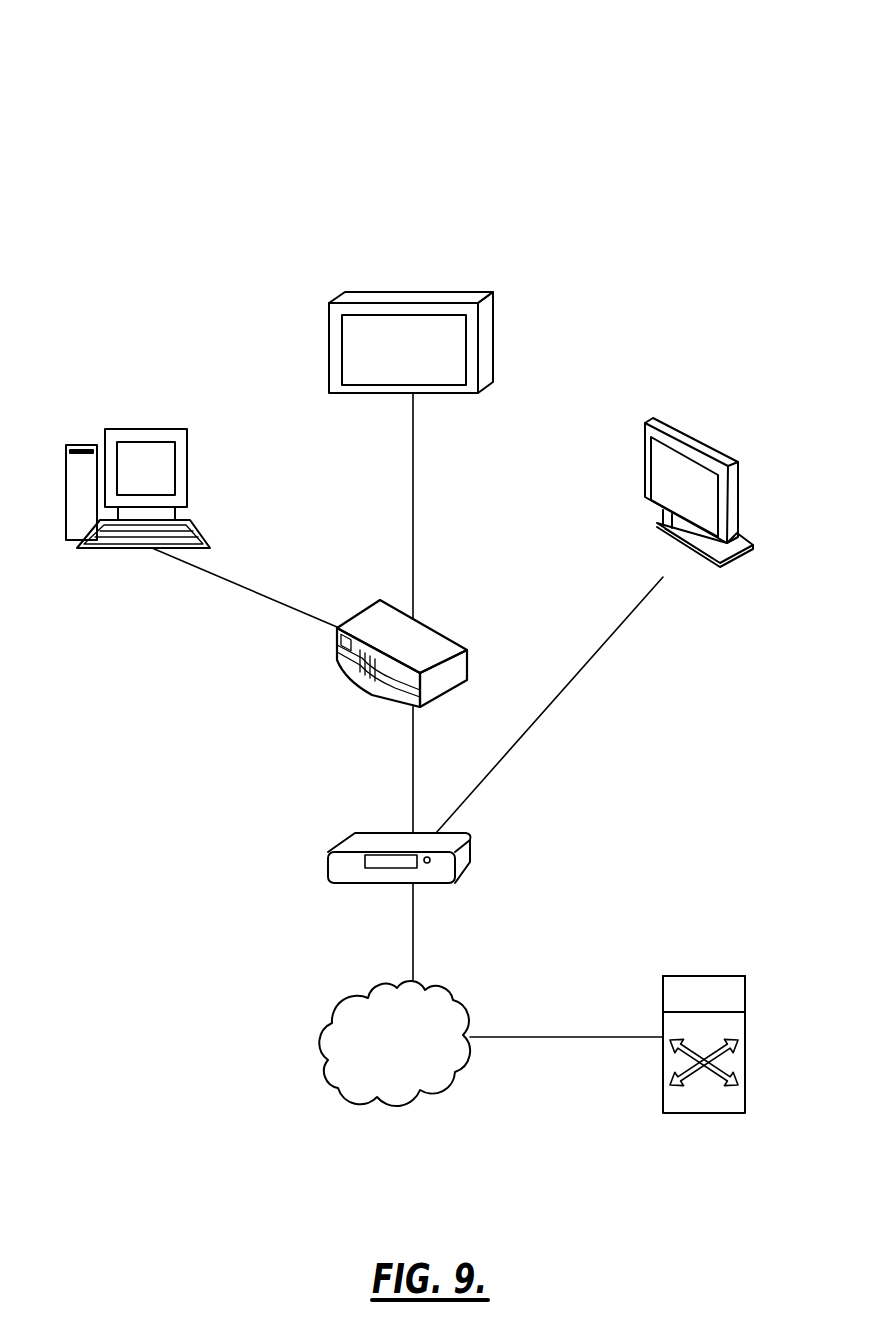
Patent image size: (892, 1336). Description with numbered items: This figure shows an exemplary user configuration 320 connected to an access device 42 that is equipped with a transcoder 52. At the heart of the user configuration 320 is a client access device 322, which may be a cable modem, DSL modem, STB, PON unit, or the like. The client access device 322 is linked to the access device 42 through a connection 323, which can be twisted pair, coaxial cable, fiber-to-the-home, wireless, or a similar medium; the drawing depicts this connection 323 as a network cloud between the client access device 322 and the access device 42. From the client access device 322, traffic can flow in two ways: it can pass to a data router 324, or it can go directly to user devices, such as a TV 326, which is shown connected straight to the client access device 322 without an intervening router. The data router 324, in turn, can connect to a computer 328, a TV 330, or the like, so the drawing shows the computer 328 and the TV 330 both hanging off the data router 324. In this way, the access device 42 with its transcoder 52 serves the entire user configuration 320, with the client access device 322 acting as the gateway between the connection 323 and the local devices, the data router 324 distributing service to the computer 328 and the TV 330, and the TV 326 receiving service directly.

The user configuration 320 is at (490, 76).
The TV 330 is at (495, 320).
The computer 328 is at (141, 428).
The TV 326 is at (737, 468).
The data router 324 is at (432, 625).
The client access device 322 is at (472, 848).
The connection 323 is at (462, 998).
The access device 42 is at (747, 1070).
The transcoder 52 is at (700, 972).